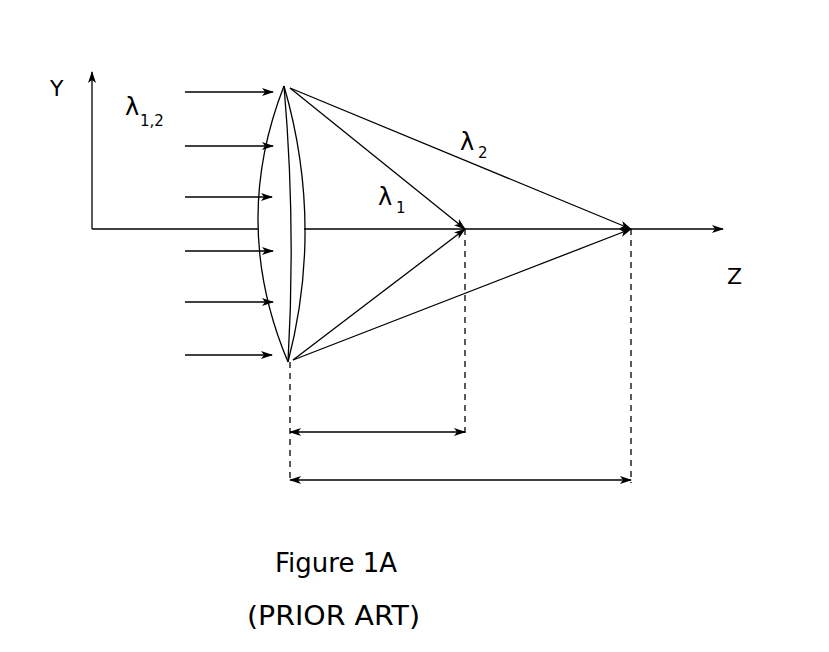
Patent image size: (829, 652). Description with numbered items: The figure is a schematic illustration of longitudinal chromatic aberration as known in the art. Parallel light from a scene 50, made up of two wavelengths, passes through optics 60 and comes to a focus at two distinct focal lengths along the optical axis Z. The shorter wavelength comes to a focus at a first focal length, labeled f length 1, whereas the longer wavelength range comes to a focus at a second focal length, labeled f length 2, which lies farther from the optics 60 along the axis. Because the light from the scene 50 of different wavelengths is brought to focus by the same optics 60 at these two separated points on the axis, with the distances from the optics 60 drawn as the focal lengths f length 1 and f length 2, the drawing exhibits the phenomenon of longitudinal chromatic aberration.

The scene 50 is at (213, 355).
The optics 60 is at (282, 84).
The focal length 1 (f_length 1) for wavelength λ 1 is at (377, 413).
The focal length 2 (f_length 2) for wavelength λ 2 is at (460, 461).